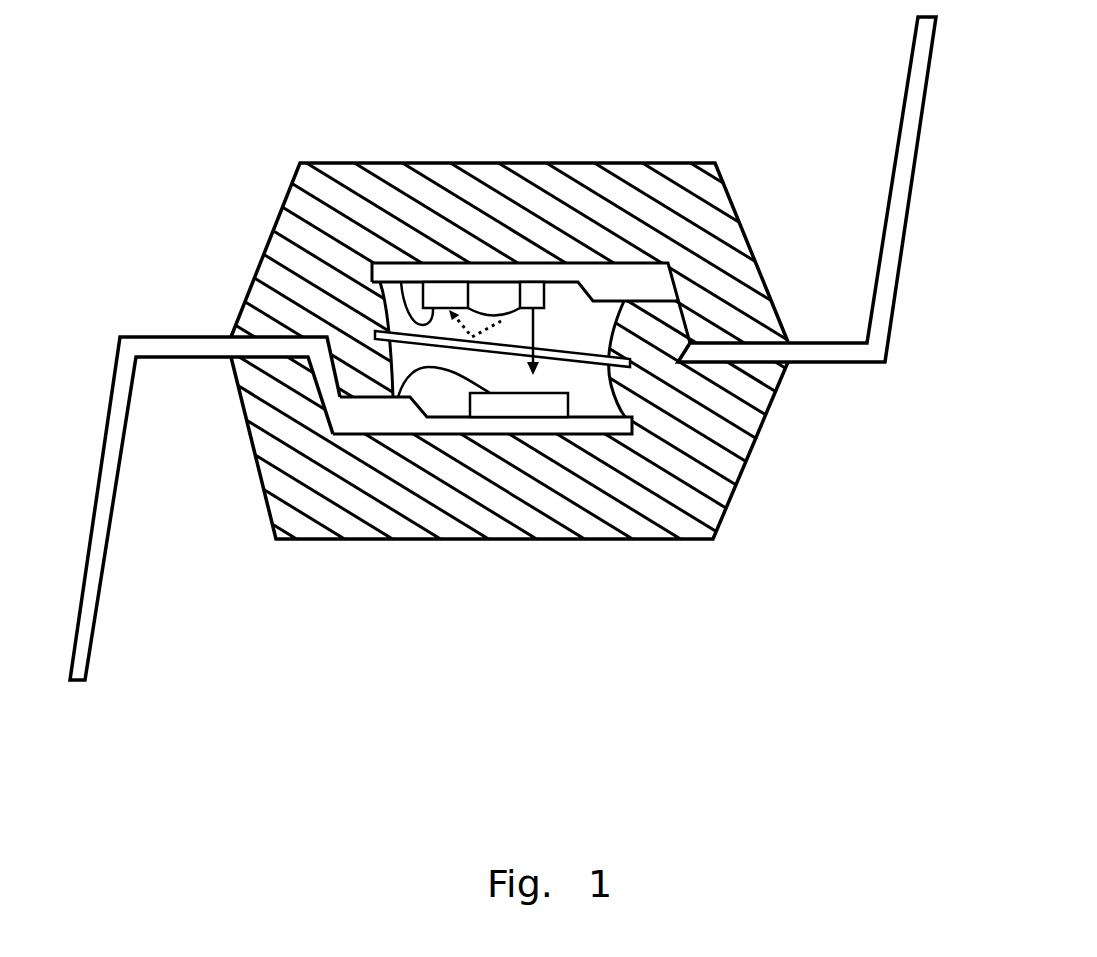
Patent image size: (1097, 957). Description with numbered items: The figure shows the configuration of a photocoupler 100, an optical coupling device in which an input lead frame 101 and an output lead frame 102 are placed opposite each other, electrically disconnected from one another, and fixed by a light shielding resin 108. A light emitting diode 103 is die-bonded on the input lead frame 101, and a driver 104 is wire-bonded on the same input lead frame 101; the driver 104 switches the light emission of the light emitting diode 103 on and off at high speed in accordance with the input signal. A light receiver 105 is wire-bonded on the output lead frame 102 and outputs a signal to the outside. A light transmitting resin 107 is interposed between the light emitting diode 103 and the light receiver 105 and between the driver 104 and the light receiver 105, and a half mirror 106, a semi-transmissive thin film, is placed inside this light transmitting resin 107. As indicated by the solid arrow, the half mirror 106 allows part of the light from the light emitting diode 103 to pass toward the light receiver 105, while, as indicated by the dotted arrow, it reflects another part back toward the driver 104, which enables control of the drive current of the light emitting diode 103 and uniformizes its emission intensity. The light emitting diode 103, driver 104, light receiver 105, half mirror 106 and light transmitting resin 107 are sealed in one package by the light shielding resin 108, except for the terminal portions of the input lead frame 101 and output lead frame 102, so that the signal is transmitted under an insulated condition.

The photocoupler 100 is at (548, 348).
The input lead frame 101 is at (908, 76).
The output lead frame 102 is at (92, 653).
The light emitting diode 103 is at (533, 284).
The driver 104 is at (442, 287).
The light receiver 105 is at (490, 408).
The half mirror 106 is at (633, 363).
The light transmitting resin 107 is at (582, 408).
The light shielding resin 108 is at (718, 510).